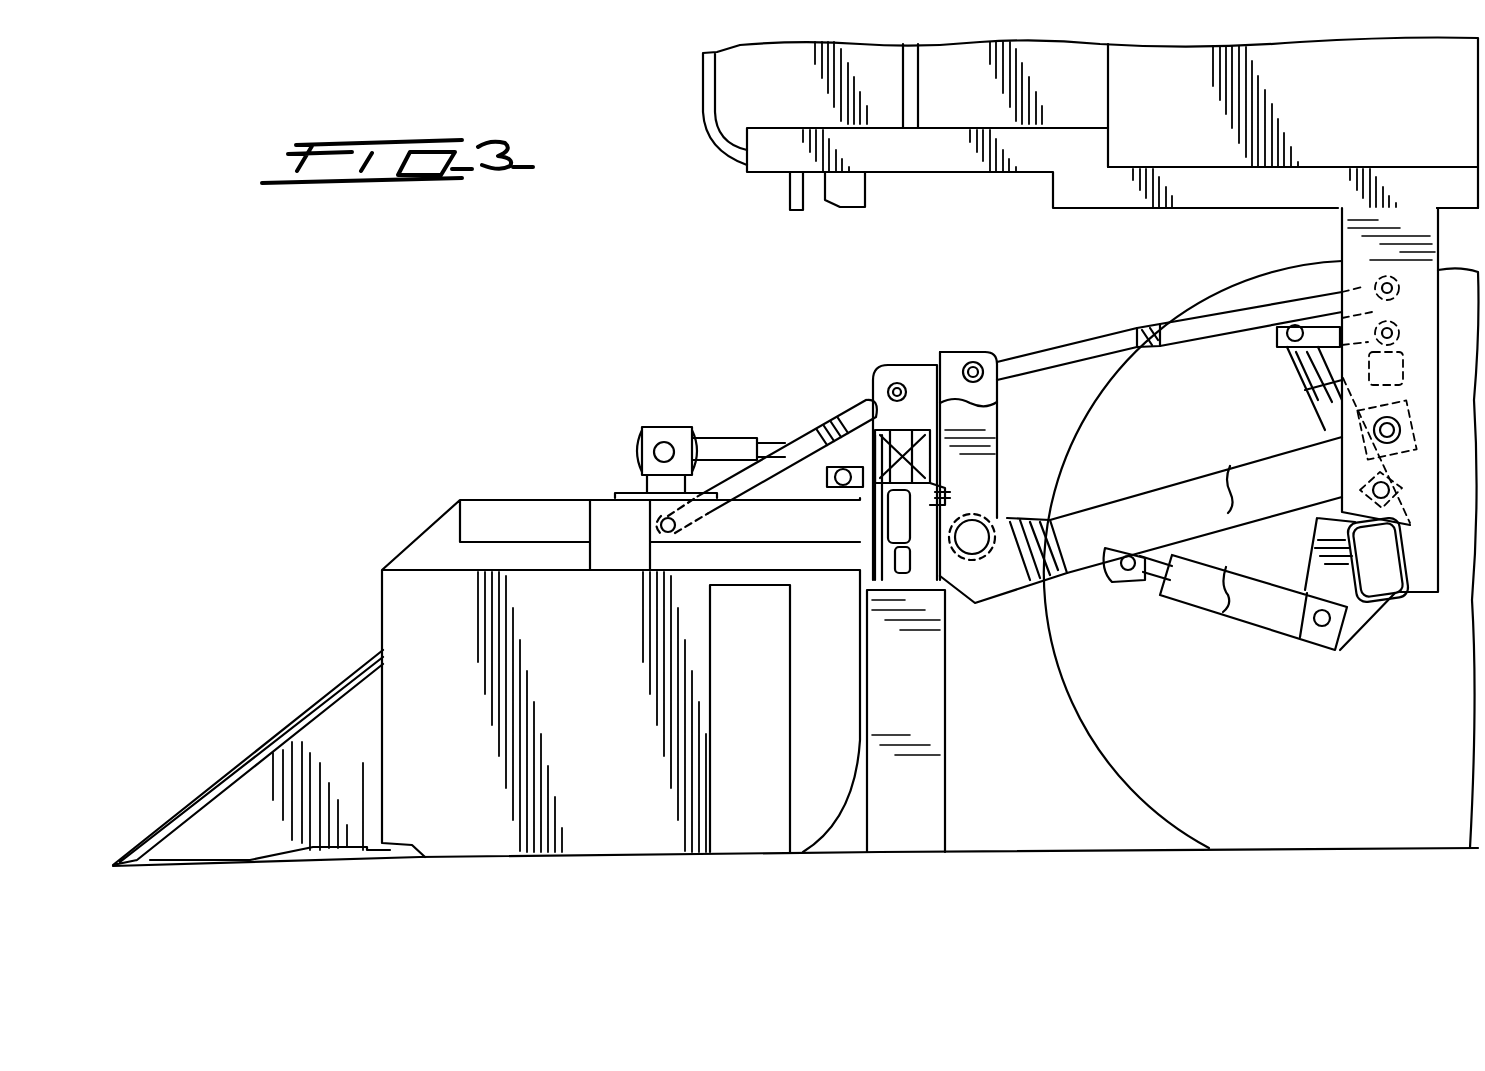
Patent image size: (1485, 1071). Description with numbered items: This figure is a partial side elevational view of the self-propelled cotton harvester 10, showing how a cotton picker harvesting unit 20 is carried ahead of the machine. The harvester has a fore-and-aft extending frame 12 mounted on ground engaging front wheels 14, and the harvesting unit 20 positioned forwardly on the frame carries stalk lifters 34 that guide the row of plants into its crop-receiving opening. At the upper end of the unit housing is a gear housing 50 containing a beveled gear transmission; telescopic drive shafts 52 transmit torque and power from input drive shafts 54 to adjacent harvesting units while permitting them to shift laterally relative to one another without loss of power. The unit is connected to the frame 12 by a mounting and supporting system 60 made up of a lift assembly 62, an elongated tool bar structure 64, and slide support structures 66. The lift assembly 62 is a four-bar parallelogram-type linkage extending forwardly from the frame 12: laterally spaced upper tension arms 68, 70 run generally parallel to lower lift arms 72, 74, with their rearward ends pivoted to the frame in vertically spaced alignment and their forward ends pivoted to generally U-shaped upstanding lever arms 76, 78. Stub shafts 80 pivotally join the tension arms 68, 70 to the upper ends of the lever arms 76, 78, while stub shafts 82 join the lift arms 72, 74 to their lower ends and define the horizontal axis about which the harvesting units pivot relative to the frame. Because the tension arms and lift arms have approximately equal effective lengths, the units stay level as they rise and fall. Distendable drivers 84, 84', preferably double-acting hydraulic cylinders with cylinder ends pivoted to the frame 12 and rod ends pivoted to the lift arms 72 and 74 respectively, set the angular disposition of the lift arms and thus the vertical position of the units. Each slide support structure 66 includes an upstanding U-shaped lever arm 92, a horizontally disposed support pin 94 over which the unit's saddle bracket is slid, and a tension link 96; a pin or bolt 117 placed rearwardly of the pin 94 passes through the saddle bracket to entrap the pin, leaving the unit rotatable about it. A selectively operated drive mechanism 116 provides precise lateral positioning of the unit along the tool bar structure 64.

The cotton harvester 10 is at (712, 158).
The frame 12 is at (1067, 195).
The front wheels 14 is at (1113, 735).
The cotton picker harvesting unit 20 is at (590, 689).
The stalk lifters 34 is at (284, 733).
The gear housing 50 is at (662, 442).
The telescopic drive shafts 52 is at (716, 447).
The input drive shafts 54 is at (1002, 512).
The mounting and supporting system 60 is at (952, 356).
The lift assembly 62 is at (1182, 346).
The tool bar structure 64 is at (908, 572).
The slide support structure 66 is at (897, 362).
The upper tension arm 68 is at (1103, 345).
The upper tension arm 70 is at (1198, 327).
The lift arm 72 is at (1161, 495).
The lift arm 74 is at (1267, 460).
The lever arm 76 is at (987, 420).
The lever arm 78 is at (980, 395).
The stub shafts 80 is at (977, 358).
The stub shafts 82 is at (995, 585).
The distendable driver 84 is at (1249, 599).
The distendable driver 84' is at (1272, 641).
The lever arm 92 is at (912, 365).
The support pin 94 is at (818, 460).
The tension link 96 is at (828, 420).
The drive mechanism 116 is at (968, 490).
The pin or bolt 117 is at (853, 487).